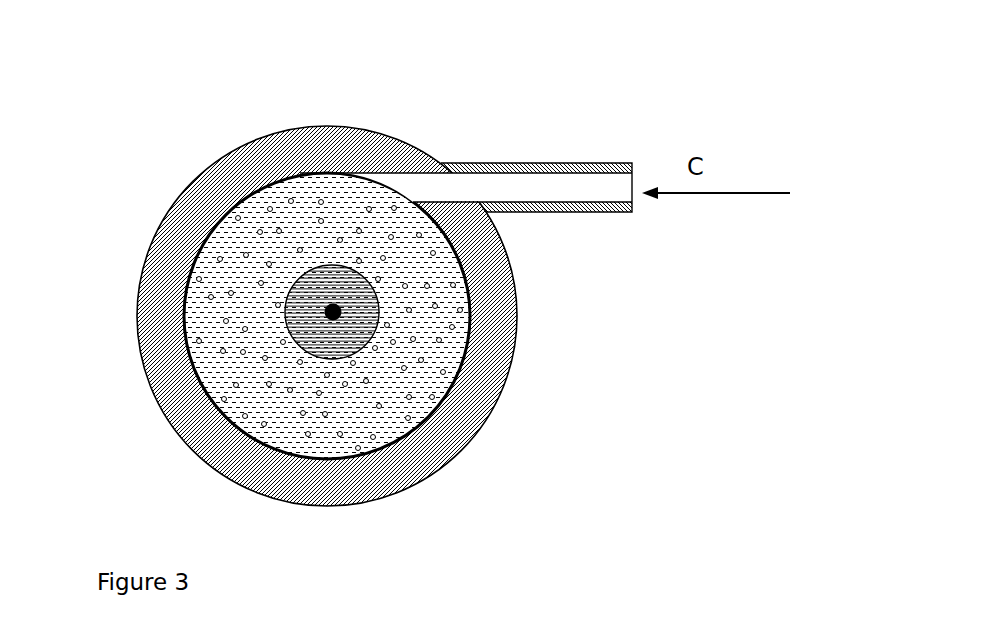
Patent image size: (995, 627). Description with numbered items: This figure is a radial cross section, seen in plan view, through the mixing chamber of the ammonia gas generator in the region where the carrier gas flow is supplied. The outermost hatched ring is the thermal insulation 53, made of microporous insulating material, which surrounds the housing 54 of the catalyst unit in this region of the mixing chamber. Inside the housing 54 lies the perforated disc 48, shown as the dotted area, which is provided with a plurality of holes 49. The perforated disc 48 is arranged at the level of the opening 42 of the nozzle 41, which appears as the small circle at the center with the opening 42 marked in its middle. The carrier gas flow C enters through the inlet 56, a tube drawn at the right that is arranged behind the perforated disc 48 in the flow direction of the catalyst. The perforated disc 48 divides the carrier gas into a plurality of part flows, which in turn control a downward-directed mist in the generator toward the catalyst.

The nozzle 41 is at (363, 343).
The opening of the nozzle 42 is at (333, 312).
The perforated disc 48 is at (303, 210).
The holes 49 is at (378, 238).
The thermal insulation 53 is at (145, 300).
The housing 54 is at (190, 238).
The inlet 56 is at (495, 192).